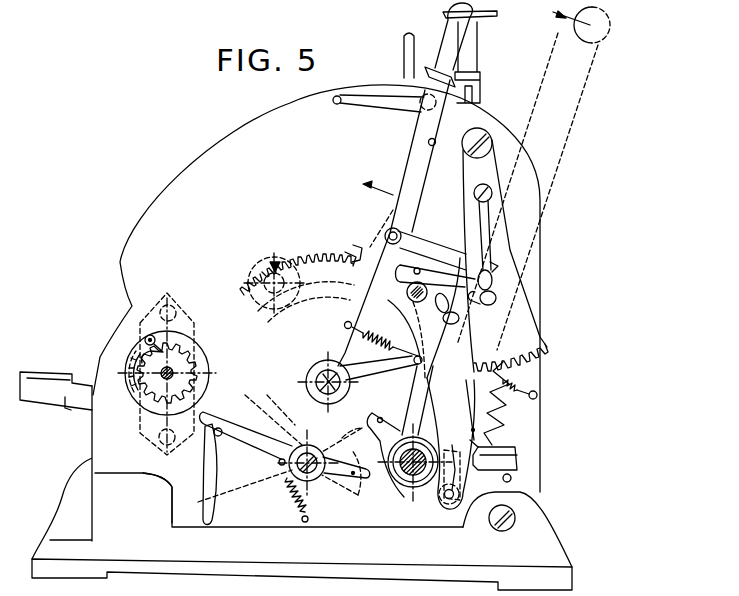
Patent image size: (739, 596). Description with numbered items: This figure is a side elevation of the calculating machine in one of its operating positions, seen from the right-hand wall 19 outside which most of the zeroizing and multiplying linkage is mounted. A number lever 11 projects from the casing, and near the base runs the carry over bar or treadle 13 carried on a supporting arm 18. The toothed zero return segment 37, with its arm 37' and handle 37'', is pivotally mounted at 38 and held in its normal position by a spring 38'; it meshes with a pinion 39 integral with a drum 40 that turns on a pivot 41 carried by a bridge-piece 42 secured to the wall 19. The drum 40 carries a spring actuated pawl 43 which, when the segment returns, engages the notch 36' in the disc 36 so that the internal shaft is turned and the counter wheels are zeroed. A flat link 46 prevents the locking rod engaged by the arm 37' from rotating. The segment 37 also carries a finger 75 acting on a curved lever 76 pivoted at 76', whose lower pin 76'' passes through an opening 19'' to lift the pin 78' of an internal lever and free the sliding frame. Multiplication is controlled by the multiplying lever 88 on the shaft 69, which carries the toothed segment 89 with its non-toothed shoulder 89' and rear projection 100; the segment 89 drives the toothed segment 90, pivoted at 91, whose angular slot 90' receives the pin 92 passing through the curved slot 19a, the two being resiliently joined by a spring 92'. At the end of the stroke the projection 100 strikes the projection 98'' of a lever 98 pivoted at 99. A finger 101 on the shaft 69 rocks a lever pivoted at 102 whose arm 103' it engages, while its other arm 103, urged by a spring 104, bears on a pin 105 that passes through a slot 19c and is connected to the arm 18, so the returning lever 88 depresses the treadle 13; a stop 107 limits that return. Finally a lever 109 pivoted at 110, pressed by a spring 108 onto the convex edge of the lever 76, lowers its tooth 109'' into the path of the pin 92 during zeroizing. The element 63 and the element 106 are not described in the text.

The number lever 11 is at (405, 52).
The carry over bar or treadle 13 is at (62, 372).
The supporting arm of the treadle 18 is at (65, 403).
The wall 19 is at (302, 337).
The curved slot 19a is at (419, 267).
The slot 19c is at (210, 475).
The opening 19'' is at (505, 443).
The disc 36 is at (110, 371).
The notch 36' is at (105, 363).
The toothed zero return segment 37 is at (279, 287).
The arm 37' is at (396, 216).
The handle 37'' is at (420, 53).
The pivot 38 is at (321, 378).
The spring 38' is at (461, 373).
The pinion 39 is at (180, 348).
The drum 40 is at (147, 394).
The pivot 41 is at (173, 371).
The bridge-piece 42 is at (135, 312).
The spring actuated pawl 43 is at (145, 341).
The flat link 46 is at (373, 101).
The plate 63 is at (500, 14).
The shaft 69 is at (413, 487).
The finger 75 is at (412, 425).
The curved lever 76 is at (435, 372).
The pivot 76' is at (266, 250).
The pin 76'' is at (436, 502).
The pin 78' is at (487, 532).
The multiplying lever 88 is at (589, 82).
The toothed segment 89 is at (534, 403).
The shoulder or non-toothed portion 89' is at (548, 447).
The toothed segment 90 is at (530, 356).
The angular slot 90' is at (474, 318).
The pivot 91 is at (486, 147).
The pin 92 is at (523, 287).
The spring 92' is at (530, 235).
The lever 98 is at (385, 330).
The projection 98'' is at (570, 397).
The pivot 99 is at (397, 282).
The projection 100 is at (518, 460).
The finger 101 is at (378, 419).
The pivot 102 is at (307, 445).
The arm of the rocking lever 103 is at (284, 434).
The arm of the rocking lever 103' is at (341, 488).
The spring 104 is at (291, 502).
The pin 105 is at (219, 440).
The clip 106 is at (457, 321).
The stop 107 is at (512, 478).
The spring 108 is at (356, 246).
The lever 109 is at (323, 247).
The tooth 109'' is at (549, 263).
The pivot 110 is at (397, 230).